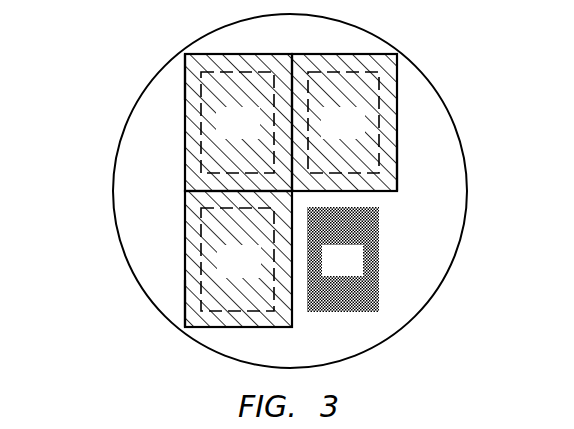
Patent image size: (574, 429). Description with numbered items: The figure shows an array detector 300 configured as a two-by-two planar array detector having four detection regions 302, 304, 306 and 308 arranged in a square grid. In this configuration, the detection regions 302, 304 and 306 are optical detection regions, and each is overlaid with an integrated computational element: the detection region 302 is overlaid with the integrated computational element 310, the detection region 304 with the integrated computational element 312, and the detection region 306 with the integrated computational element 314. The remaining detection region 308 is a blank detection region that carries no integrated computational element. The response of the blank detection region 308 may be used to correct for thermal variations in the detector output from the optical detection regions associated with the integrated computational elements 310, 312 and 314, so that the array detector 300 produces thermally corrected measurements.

The array detector 300 is at (457, 77).
The detection region 302 is at (255, 275).
The detection region 304 is at (255, 135).
The detection region 306 is at (360, 135).
The blank detection region 308 is at (360, 273).
The integrated computational element 310 is at (186, 310).
The integrated computational element 312 is at (187, 65).
The integrated computational element 314 is at (388, 169).